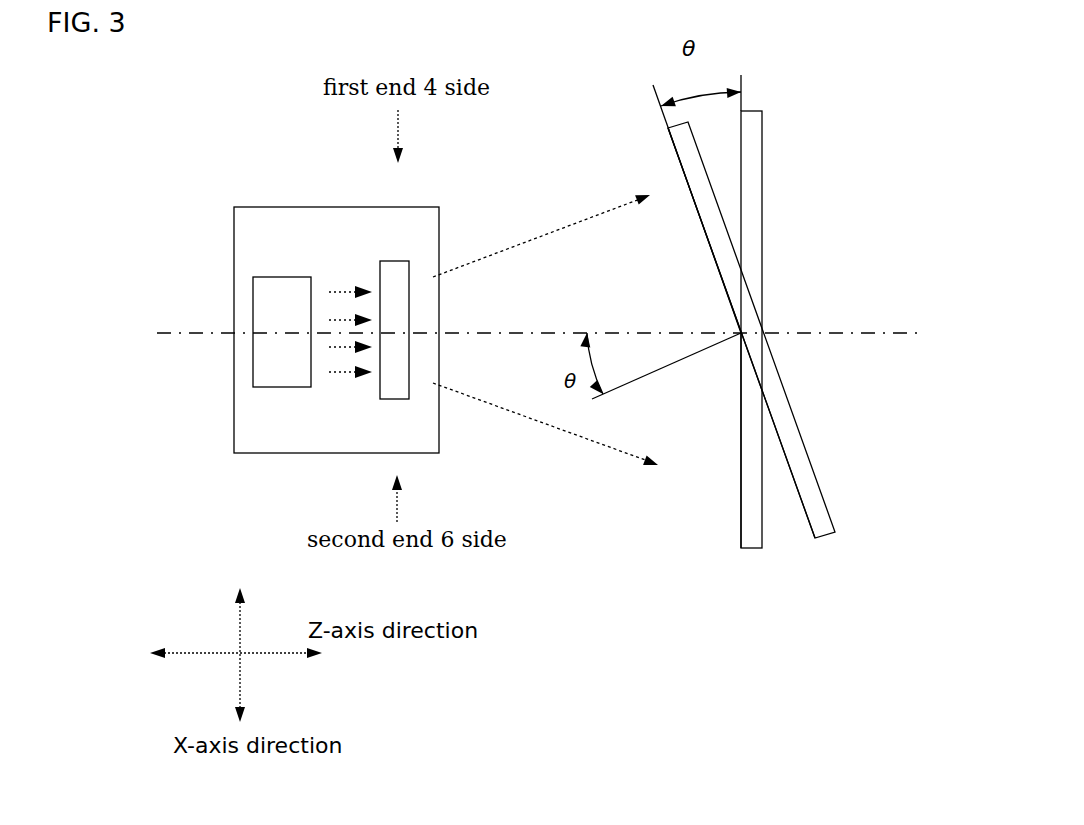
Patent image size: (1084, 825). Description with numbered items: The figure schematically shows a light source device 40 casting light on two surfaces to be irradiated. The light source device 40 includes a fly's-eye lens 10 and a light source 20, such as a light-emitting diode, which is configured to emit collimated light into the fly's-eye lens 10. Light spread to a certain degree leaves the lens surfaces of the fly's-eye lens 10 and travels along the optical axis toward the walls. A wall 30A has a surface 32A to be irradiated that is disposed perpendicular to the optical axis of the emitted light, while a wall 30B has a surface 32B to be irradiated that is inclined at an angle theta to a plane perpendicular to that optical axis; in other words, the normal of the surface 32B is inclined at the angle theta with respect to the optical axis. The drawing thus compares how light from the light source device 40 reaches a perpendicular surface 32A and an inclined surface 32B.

The fly's-eye lens 10 is at (391, 285).
The light source 20 is at (275, 300).
The light source device 40 is at (275, 440).
The wall 30A is at (752, 533).
The wall 30B is at (823, 527).
The surface to be irradiated 32A is at (730, 499).
The surface to be irradiated 32B is at (670, 173).